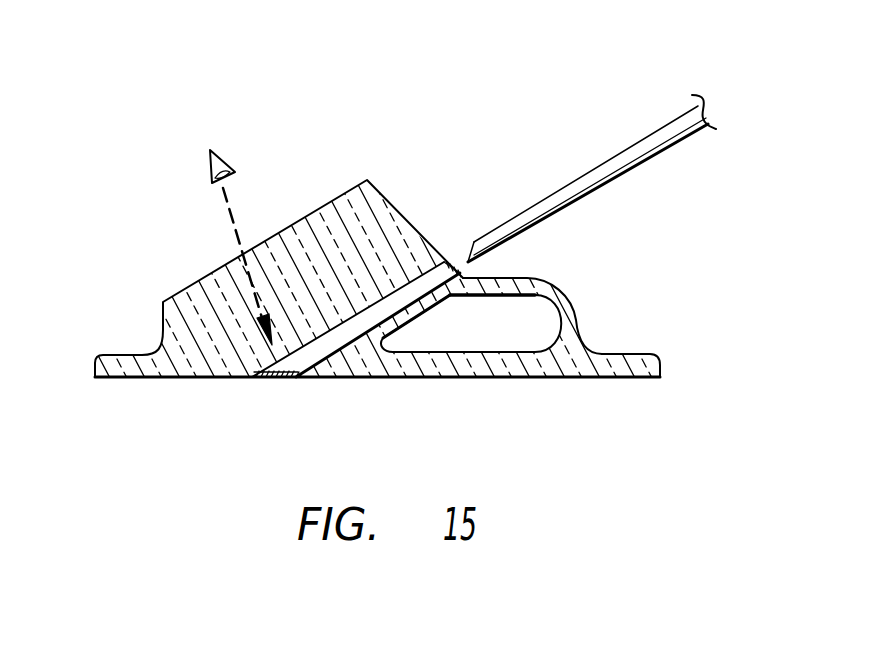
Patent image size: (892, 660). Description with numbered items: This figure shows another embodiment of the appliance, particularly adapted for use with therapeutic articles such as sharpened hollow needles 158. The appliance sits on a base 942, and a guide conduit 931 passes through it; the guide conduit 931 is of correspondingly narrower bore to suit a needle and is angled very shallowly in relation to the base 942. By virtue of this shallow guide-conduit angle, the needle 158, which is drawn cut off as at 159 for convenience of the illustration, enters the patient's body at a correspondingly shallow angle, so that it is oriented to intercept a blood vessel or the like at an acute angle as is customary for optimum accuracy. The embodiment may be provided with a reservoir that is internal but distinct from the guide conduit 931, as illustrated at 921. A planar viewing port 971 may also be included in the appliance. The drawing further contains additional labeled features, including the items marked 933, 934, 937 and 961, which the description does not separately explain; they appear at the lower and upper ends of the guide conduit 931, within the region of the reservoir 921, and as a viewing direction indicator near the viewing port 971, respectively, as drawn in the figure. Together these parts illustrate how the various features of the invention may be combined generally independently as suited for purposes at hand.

The sharpened hollow needle 158 is at (640, 160).
The cut-off point of needle 159 is at (700, 95).
The reservoir 921 is at (524, 337).
The guide conduit 931 is at (352, 322).
The blade base contact surface 933 is at (275, 378).
The blade tip contact surface 934 is at (453, 262).
The slot 937 is at (420, 316).
The base 942 is at (115, 380).
The viewing direction arrow 961 is at (237, 218).
The planar viewing port 971 is at (302, 218).